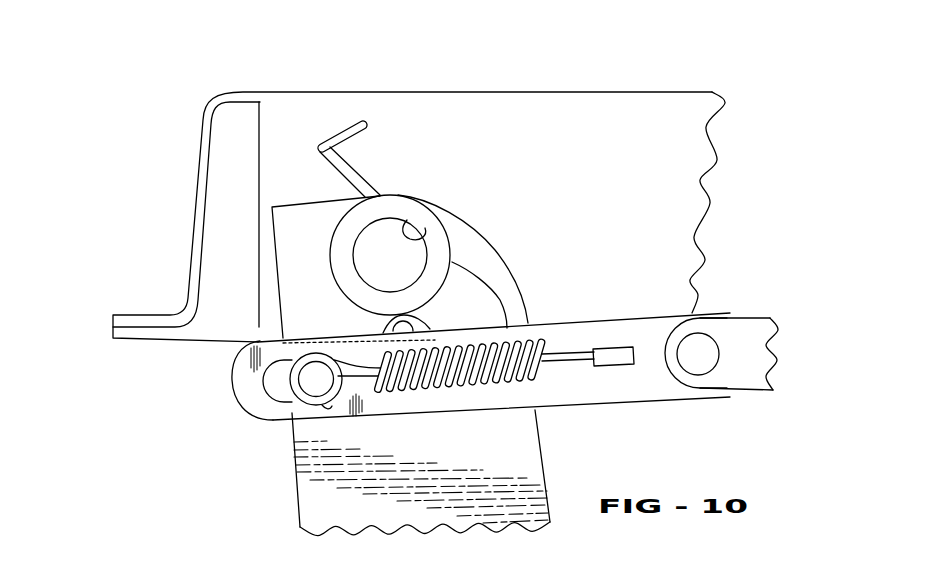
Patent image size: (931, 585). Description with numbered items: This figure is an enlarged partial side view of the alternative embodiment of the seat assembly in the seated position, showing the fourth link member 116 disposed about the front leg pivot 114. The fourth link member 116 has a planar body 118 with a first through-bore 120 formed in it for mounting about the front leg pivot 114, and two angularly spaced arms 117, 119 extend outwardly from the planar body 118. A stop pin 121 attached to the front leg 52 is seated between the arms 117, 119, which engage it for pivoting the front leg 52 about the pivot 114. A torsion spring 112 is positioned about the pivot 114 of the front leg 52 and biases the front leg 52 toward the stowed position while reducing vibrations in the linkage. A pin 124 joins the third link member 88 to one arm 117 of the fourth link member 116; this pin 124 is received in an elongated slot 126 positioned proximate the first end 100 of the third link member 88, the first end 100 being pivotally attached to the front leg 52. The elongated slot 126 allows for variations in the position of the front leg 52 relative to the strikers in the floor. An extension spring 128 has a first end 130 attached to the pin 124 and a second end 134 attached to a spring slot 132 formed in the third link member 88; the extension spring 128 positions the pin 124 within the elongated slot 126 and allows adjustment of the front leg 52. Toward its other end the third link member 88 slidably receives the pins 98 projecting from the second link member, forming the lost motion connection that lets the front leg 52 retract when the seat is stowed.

The front leg 52 is at (437, 527).
The third link member 88 is at (568, 407).
The pin 98 is at (698, 355).
The first end of the third link member 100 is at (230, 377).
The torsion spring 112 is at (349, 131).
The front leg pivot 114 is at (390, 253).
The fourth link member 116 is at (457, 229).
The arm of the fourth link member 117 is at (342, 318).
The planar body 118 is at (392, 202).
The arm of the fourth link member 119 is at (499, 277).
The first through-bore 120 is at (407, 220).
The stop pin 121 is at (428, 323).
The pin 124 is at (325, 380).
The elongated slot 126 is at (280, 393).
The extension spring 128 is at (533, 351).
The first end of the extension spring 130 is at (320, 408).
The spring slot 132 is at (636, 354).
The second end of the extension spring 134 is at (605, 357).